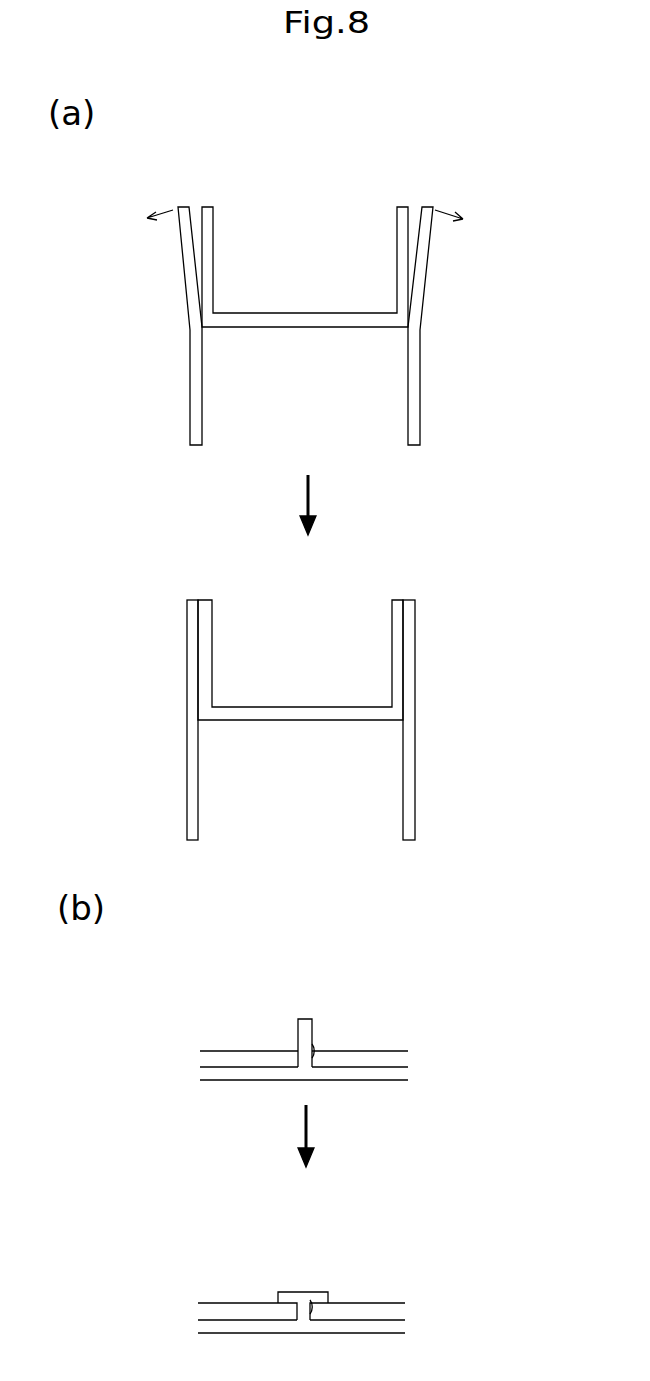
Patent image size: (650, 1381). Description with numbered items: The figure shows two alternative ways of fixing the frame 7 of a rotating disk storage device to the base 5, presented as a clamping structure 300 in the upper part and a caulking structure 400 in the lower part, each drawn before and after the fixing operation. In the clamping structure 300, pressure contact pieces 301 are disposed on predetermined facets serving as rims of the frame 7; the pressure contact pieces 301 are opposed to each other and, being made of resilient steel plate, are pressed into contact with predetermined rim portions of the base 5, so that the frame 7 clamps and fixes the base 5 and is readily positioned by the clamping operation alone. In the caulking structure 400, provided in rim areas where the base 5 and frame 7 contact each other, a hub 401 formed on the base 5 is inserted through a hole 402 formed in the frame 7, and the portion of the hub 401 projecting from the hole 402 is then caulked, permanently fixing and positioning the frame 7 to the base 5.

The clamping structure 300 is at (250, 189).
The pressure contact pieces 301 is at (181, 262).
The base 5 is at (397, 250).
The frame 7 is at (420, 378).
The caulking structure 400 is at (250, 984).
The hub 401 is at (307, 1020).
The hole 402 is at (313, 1048).